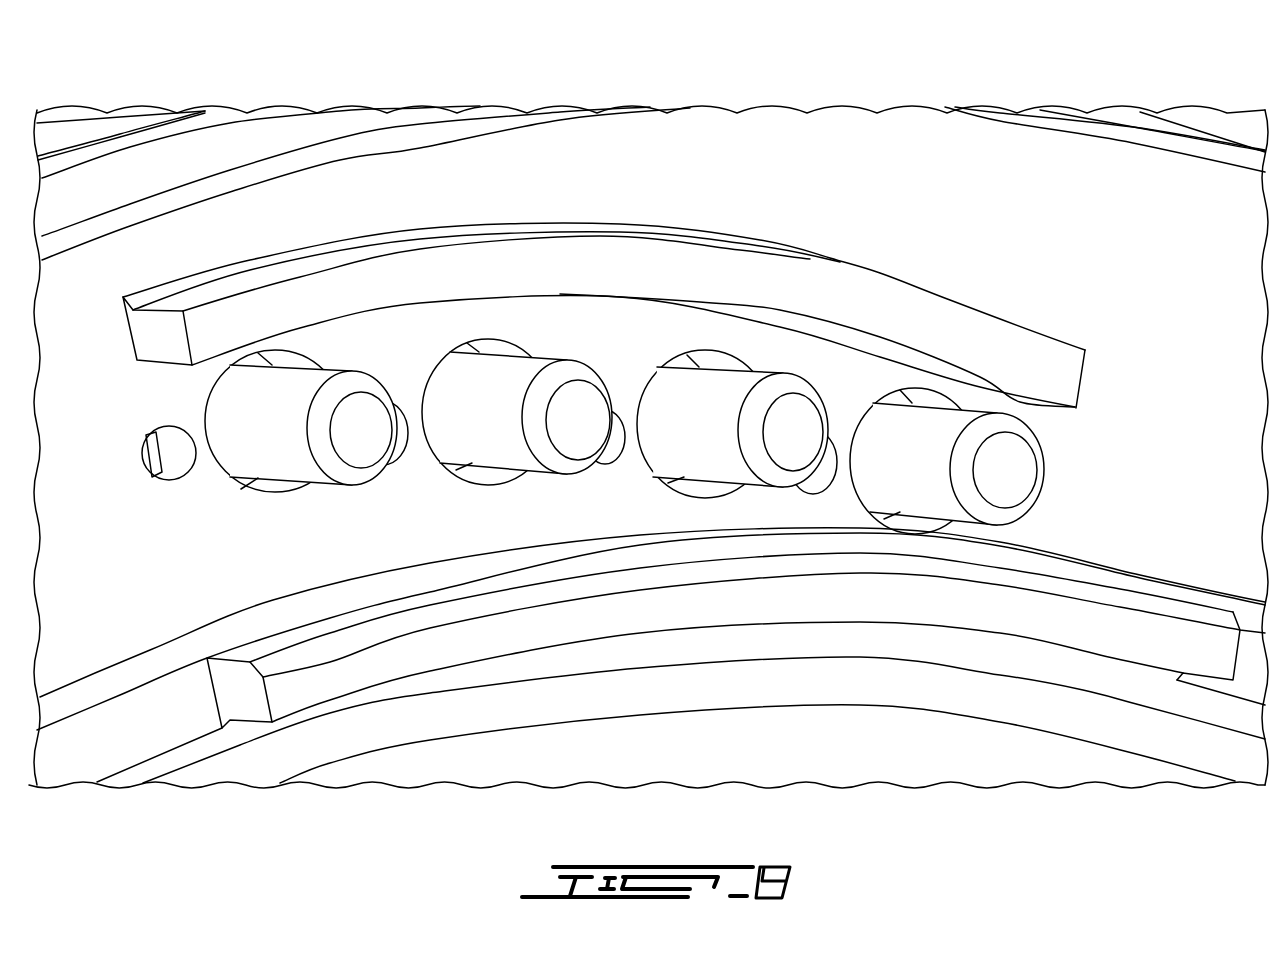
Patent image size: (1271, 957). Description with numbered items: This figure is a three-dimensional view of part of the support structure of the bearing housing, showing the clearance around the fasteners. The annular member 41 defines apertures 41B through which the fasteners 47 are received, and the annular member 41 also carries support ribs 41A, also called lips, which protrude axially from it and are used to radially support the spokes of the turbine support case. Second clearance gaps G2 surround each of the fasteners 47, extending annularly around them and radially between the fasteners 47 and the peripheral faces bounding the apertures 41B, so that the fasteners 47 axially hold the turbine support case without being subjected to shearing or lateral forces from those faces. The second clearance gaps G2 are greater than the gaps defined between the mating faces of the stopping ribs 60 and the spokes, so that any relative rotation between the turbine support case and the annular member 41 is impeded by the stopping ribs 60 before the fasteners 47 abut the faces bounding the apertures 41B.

The annular member 41 is at (937, 187).
The support ribs 41A is at (1053, 620).
The apertures 41B is at (917, 397).
The fasteners 47 is at (720, 422).
The stopping ribs 60 is at (620, 212).
The second clearance gaps G2 is at (660, 497).